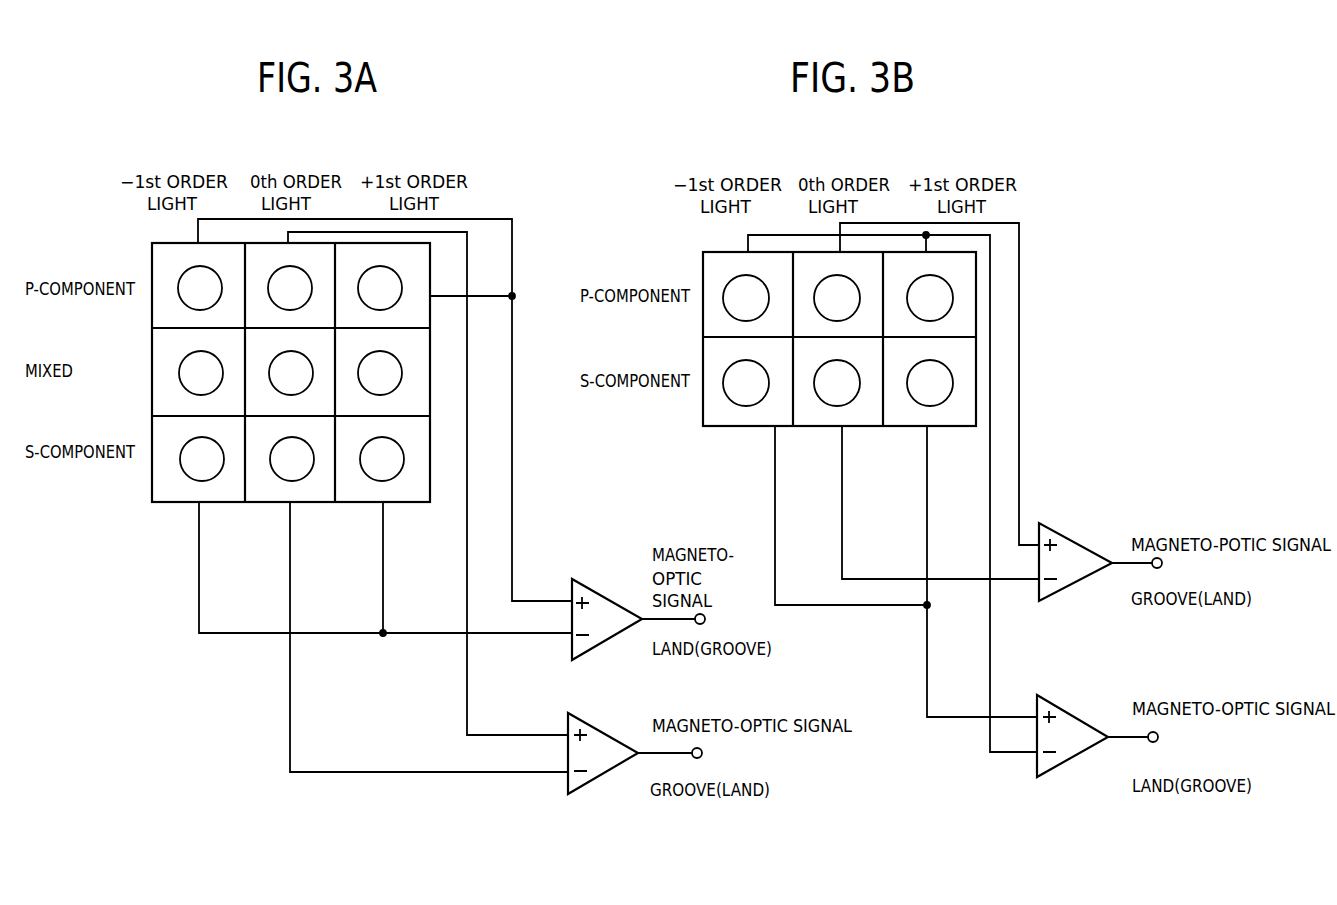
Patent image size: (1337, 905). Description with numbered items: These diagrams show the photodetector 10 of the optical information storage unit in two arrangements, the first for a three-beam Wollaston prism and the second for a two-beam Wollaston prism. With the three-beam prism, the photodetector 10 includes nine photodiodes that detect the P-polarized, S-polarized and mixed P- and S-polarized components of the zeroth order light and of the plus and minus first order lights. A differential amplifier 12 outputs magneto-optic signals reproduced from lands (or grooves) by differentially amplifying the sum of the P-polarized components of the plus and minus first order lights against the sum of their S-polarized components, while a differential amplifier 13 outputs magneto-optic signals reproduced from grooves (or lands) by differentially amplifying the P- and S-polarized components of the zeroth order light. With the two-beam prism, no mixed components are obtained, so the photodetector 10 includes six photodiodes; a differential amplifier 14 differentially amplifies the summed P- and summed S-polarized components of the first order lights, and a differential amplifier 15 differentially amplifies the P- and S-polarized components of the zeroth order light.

In FIG. 3A, the photodetector 10 is at (166, 508).
In FIG. 3B, the photodetector 10 is at (717, 434).
In FIG. 3A, the differential amplifier 12 is at (604, 598).
In FIG. 3A, the differential amplifier 13 is at (611, 742).
In FIG. 3B, the differential amplifier 14 is at (1080, 722).
In FIG. 3B, the differential amplifier 15 is at (1072, 543).